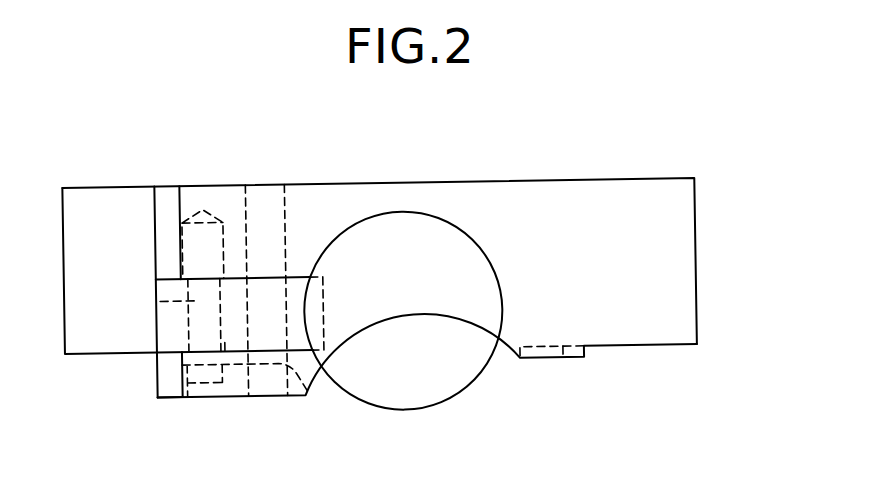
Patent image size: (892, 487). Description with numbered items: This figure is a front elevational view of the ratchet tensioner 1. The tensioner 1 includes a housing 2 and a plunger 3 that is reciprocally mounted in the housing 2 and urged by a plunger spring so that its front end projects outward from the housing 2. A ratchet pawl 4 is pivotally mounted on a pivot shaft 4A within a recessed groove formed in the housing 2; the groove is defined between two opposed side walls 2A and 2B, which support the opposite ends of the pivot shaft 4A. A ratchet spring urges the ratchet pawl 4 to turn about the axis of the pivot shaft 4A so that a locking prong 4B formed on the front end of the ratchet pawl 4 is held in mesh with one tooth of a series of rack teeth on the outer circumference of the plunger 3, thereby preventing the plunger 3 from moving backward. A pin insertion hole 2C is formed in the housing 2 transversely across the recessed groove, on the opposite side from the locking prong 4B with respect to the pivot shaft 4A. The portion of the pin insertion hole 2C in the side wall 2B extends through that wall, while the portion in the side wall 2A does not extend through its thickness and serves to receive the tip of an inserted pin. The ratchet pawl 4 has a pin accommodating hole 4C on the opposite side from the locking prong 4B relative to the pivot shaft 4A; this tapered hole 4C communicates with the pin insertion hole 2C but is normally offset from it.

The ratchet tensioner 1 is at (528, 166).
The housing 2 is at (653, 197).
The side wall 2A is at (162, 190).
The side wall 2B is at (166, 385).
The pin insertion hole 2C is at (206, 232).
The plunger 3 is at (427, 237).
The ratchet pawl 4 is at (165, 330).
The pivot shaft 4A is at (268, 207).
The locking prong 4B is at (317, 318).
The pin accommodating hole 4C is at (158, 300).